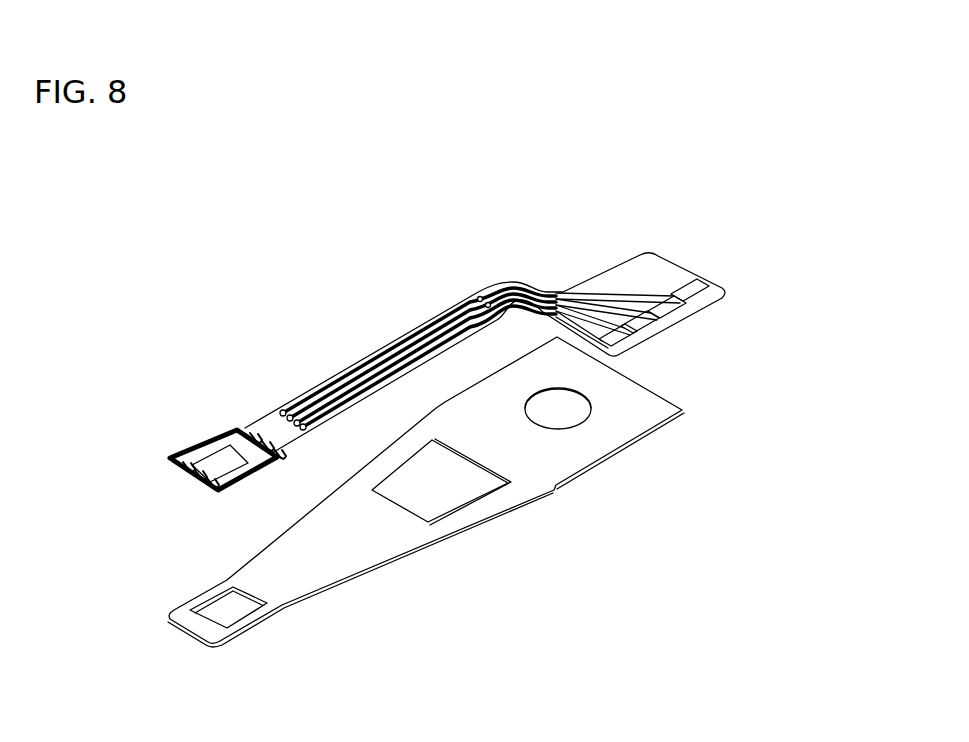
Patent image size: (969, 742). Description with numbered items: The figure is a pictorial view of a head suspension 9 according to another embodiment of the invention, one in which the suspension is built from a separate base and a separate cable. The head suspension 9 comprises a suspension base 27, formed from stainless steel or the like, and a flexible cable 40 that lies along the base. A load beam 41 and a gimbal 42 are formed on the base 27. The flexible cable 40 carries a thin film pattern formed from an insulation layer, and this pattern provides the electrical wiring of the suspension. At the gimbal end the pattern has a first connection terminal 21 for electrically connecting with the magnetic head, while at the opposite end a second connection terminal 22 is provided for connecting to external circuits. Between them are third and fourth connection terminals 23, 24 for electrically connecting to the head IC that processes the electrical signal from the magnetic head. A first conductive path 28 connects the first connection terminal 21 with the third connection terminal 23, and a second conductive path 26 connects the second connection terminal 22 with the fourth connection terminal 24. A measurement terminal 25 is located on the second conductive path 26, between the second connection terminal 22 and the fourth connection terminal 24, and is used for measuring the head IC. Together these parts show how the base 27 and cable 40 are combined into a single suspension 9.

The head suspension 9 is at (191, 292).
The first connection terminal 21 is at (192, 480).
The second connection terminal 22 is at (698, 294).
The third connection terminal 23 is at (257, 427).
The fourth connection terminal 24 is at (284, 410).
The measurement terminal 25 is at (480, 296).
The second conductive path 26 is at (420, 332).
The suspension base 27 is at (637, 440).
The first conductive path 28 is at (252, 470).
The flexible cable 40 is at (652, 254).
The load beam 41 is at (505, 508).
The gimbal 42 is at (262, 628).